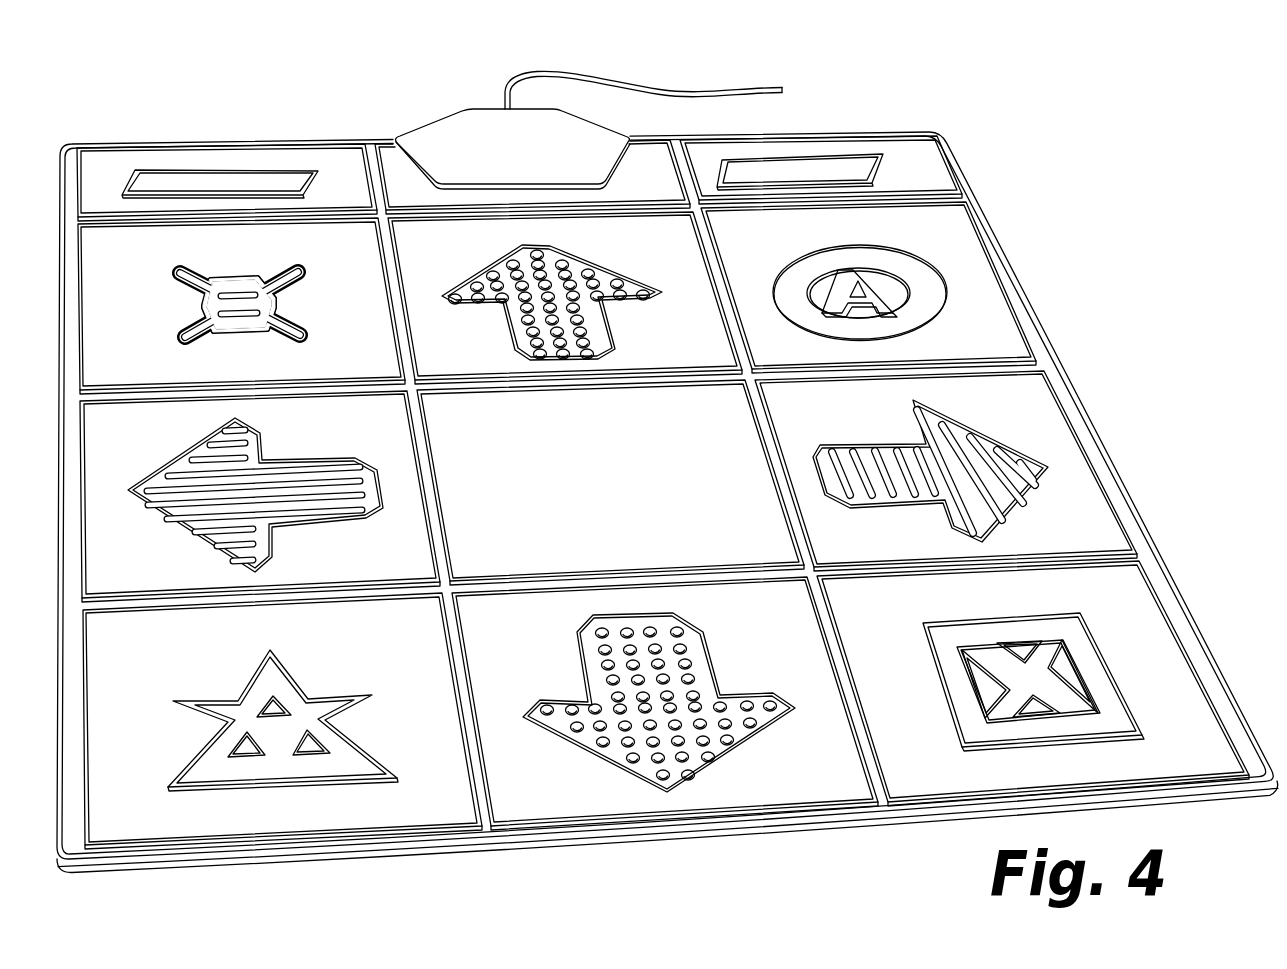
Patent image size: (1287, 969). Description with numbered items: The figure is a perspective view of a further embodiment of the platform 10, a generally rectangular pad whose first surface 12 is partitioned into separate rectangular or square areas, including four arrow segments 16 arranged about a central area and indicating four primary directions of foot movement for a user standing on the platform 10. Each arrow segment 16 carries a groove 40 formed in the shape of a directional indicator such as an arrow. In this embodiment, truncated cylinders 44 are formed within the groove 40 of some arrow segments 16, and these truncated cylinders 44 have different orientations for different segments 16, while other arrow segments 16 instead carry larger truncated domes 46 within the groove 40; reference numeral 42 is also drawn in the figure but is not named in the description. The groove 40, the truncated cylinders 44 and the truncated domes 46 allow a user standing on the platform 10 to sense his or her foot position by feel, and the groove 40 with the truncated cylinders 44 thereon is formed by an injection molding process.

The platform 10 is at (197, 104).
The first surface 12 is at (71, 143).
The arrow segments 16 is at (436, 254).
The groove 40 is at (610, 328).
The raised bumps 42 is at (655, 648).
The truncated cylinders 44 is at (200, 455).
The truncated domes 46 is at (567, 273).